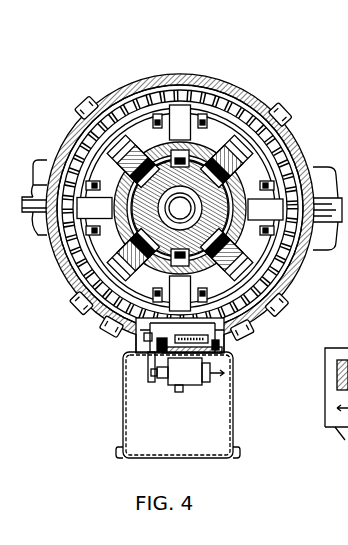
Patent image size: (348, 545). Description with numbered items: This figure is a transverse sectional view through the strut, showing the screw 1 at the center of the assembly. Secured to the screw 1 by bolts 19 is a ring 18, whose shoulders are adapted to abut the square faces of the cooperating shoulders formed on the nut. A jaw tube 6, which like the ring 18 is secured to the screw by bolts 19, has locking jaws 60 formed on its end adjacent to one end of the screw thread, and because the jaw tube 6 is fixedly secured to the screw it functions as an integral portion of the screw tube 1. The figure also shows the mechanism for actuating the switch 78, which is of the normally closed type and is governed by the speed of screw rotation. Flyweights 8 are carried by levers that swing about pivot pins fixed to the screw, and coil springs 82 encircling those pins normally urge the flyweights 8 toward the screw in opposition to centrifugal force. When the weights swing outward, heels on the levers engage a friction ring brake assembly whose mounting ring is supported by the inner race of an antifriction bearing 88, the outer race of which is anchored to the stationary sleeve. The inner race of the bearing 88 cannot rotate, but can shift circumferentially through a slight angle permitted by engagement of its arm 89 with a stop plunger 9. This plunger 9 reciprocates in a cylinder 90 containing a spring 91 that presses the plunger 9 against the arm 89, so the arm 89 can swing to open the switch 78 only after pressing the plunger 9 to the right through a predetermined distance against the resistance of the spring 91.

The screw 1 is at (147, 270).
The jaw tube 6 is at (110, 245).
The flyweights 8 is at (184, 113).
The stop plunger 9 is at (147, 370).
The ring 18 is at (90, 178).
The bolts 19 is at (212, 162).
The locking jaws 60 is at (196, 137).
The switch 78 is at (192, 385).
The coil springs 82 is at (165, 130).
The antifriction bearing 88 is at (82, 308).
The arm 89 is at (148, 362).
The cylinder 90 is at (215, 378).
The spring 91 is at (210, 360).